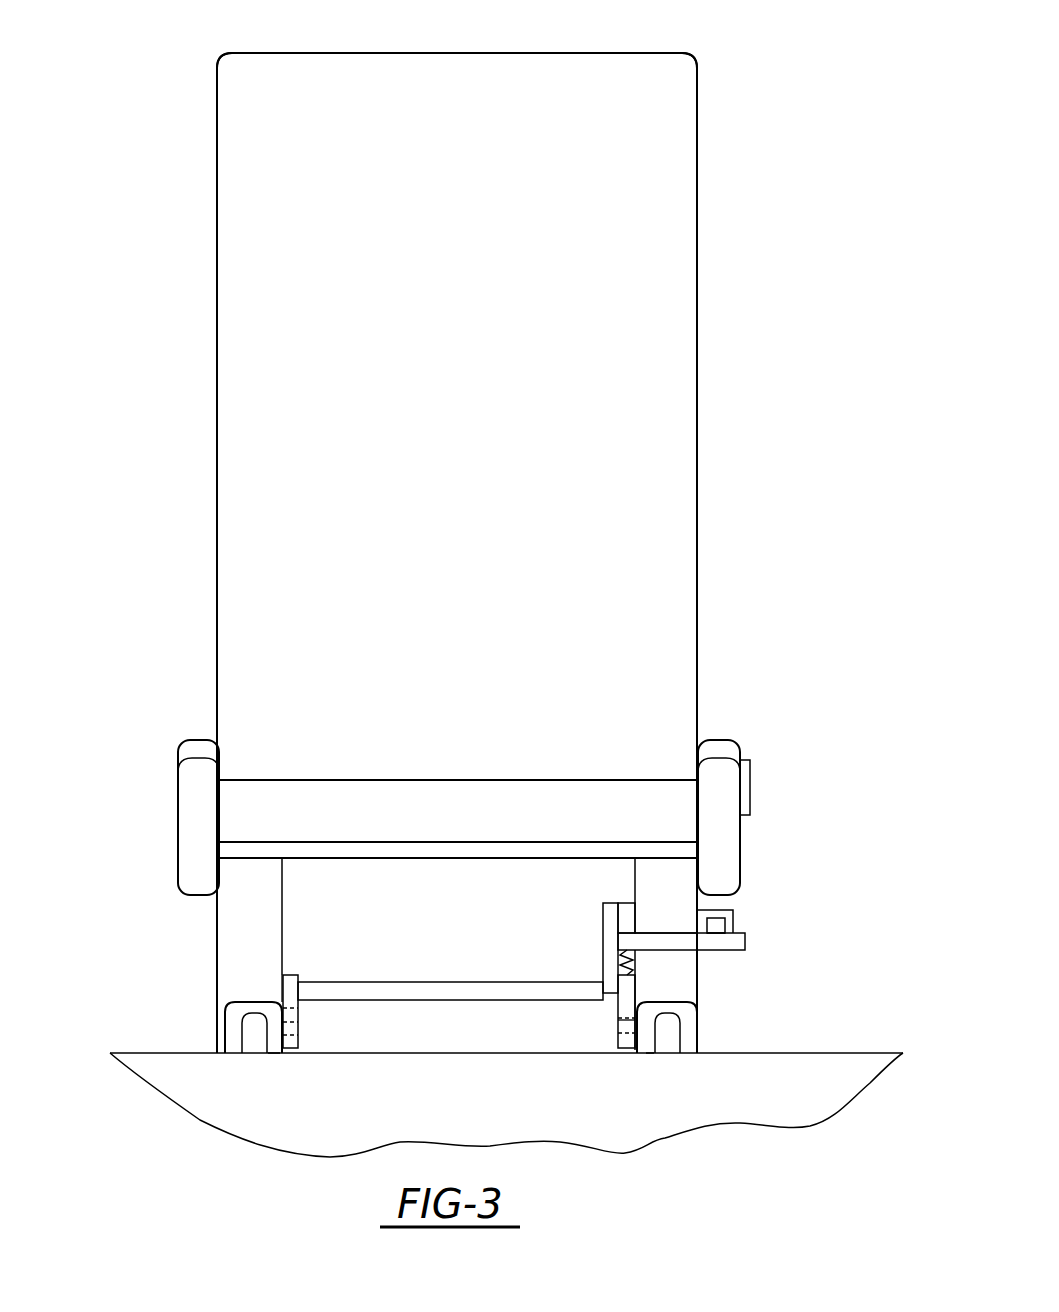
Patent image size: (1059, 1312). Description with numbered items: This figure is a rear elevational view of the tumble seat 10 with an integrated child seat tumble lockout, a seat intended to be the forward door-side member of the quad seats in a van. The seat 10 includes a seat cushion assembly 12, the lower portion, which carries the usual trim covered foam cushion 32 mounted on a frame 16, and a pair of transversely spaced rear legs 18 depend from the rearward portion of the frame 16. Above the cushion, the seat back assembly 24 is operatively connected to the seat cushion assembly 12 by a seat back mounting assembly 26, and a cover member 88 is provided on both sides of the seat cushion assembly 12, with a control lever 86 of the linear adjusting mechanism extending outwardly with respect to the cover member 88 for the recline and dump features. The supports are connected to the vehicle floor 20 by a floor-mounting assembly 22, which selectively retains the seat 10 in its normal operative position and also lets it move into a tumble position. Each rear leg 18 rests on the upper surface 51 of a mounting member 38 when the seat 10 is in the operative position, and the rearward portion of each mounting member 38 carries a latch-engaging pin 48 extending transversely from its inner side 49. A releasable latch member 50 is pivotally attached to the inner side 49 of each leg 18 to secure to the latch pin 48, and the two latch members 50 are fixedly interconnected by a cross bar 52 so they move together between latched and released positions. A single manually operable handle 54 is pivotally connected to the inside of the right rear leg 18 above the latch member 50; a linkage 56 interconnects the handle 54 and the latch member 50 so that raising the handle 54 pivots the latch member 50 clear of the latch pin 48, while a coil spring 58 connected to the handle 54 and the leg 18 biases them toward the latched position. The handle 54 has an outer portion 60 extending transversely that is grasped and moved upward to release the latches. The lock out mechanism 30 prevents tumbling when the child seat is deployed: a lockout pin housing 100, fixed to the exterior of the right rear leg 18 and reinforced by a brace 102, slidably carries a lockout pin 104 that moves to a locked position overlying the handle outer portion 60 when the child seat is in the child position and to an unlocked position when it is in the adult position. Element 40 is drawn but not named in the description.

The tumble seat 10 is at (752, 150).
The seat cushion assembly 12 is at (618, 775).
The frame 16 is at (460, 852).
The rear legs 18 is at (236, 908).
The vehicle floor 20 is at (130, 1053).
The floor-mounting assembly 22 is at (207, 1024).
The seat back assembly 24 is at (205, 441).
The seat back mounting assembly 26 is at (170, 860).
The lock out mechanism 30 is at (743, 920).
The foam cushion 32 is at (540, 838).
The mounting member 38 is at (275, 1053).
The caster yoke 40 is at (251, 1048).
The latch-engaging pin 48 is at (303, 1020).
The inner side 49 is at (595, 1023).
The latch member 50 is at (298, 1010).
The upper surface 51 is at (253, 1002).
The cross bar 52 is at (463, 987).
The handle 54 is at (628, 903).
The linkage 56 is at (610, 932).
The coil spring 58 is at (618, 965).
The outer portion 60 is at (745, 940).
The control lever 86 is at (747, 790).
The cover member 88 is at (182, 820).
The lockout pin housing 100 is at (700, 923).
The brace 102 is at (722, 903).
The lockout pin 104 is at (717, 932).